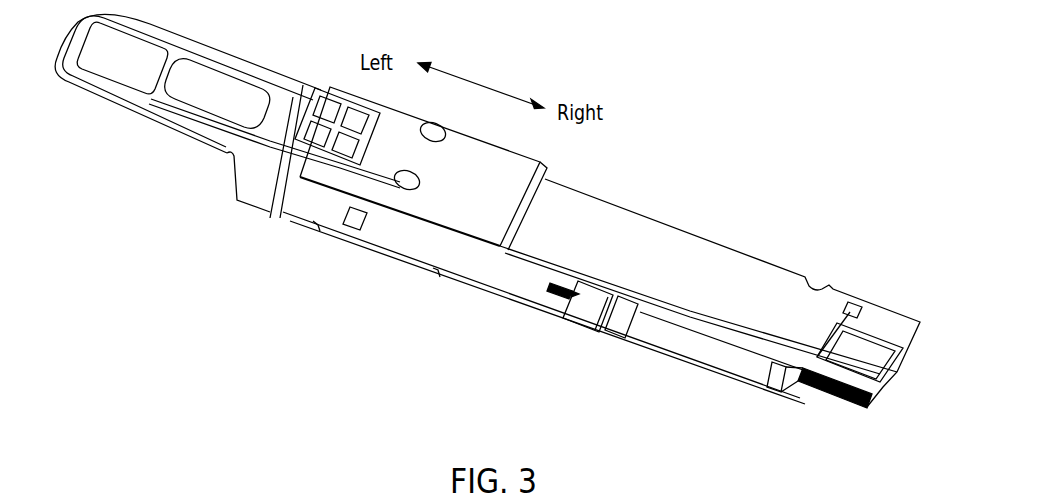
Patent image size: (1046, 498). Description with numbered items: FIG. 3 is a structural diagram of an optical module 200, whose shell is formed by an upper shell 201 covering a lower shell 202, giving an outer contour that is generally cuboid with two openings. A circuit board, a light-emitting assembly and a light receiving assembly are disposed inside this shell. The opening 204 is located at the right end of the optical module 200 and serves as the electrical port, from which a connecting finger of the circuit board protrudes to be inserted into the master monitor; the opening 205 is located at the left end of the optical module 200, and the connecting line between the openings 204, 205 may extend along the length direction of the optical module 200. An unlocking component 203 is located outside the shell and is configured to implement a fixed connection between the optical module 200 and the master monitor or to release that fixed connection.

The optical module 200 is at (497, 211).
The upper shell 201 is at (637, 217).
The lower shell 202 is at (683, 347).
The unlocking component 203 is at (407, 233).
The opening 204 is at (910, 369).
The opening 205 is at (213, 161).